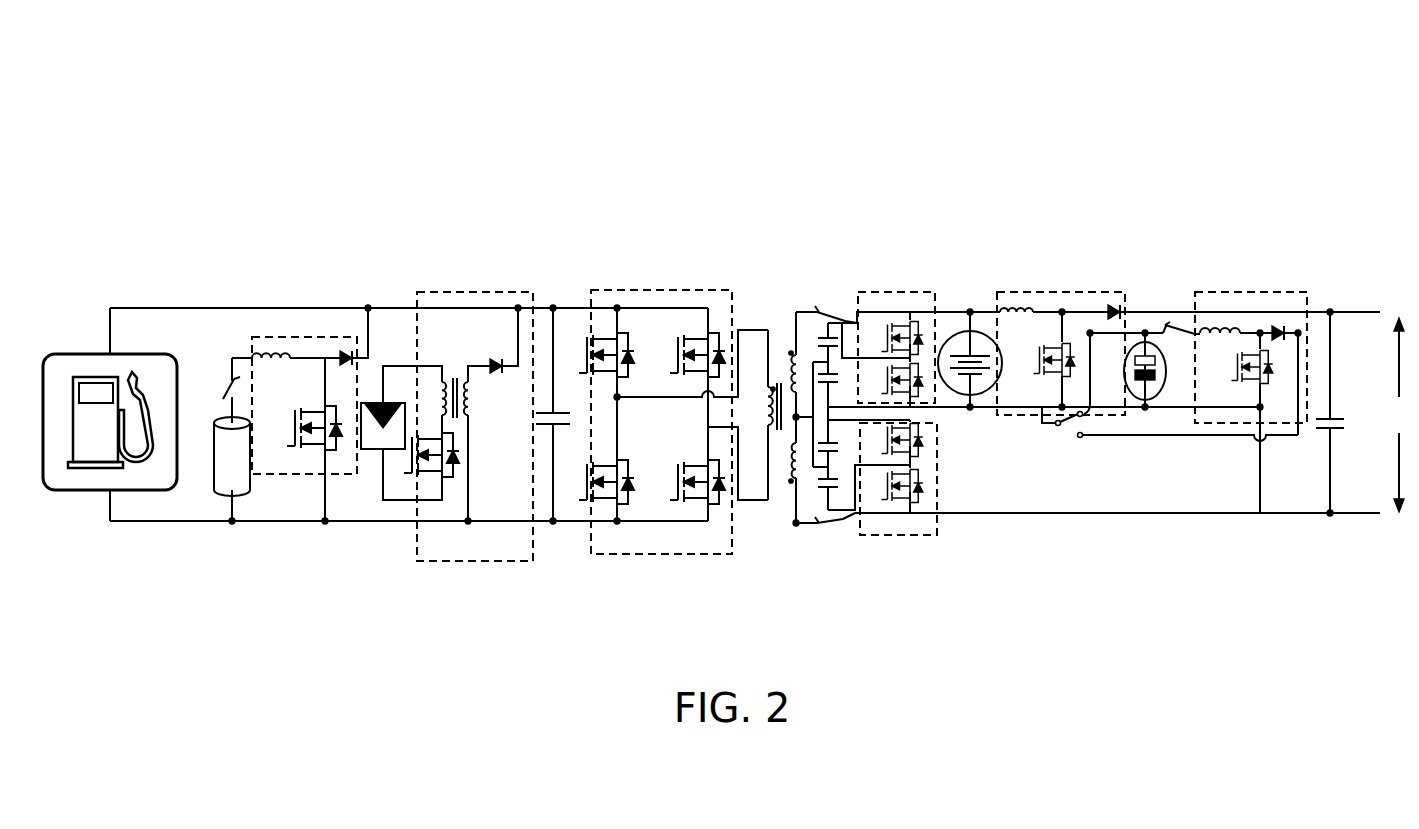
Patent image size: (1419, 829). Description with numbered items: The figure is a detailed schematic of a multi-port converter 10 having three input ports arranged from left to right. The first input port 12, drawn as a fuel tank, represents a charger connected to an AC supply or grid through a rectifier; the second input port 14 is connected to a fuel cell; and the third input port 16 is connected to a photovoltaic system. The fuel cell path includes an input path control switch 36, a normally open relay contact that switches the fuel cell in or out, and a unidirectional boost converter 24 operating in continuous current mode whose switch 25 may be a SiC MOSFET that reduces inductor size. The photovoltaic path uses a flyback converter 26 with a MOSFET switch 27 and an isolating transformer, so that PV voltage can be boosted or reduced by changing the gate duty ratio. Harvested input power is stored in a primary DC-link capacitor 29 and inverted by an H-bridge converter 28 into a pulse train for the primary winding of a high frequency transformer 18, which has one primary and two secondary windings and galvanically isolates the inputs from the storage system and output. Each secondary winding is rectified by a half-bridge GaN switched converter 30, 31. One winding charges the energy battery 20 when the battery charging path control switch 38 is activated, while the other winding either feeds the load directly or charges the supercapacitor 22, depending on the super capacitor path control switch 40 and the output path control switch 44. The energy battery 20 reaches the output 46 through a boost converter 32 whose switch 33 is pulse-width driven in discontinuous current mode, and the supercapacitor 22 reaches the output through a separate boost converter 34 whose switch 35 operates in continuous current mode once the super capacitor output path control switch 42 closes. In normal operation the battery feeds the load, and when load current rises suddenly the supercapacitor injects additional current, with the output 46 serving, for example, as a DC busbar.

The multi-port converter 10 is at (338, 292).
The first input port 12 is at (83, 492).
The second input port 14 is at (212, 472).
The third input port 16 is at (372, 452).
The high frequency transformer 18 is at (789, 322).
The energy battery 20 is at (958, 332).
The supercapacitor 22 is at (1148, 332).
The unidirectional boost converter 24 is at (278, 478).
The switch 25 is at (313, 456).
The flyback converter 26 is at (475, 563).
The MOSFET switch 27 is at (430, 482).
The H-bridge converter 28 is at (660, 556).
The primary DC-link capacitor 29 is at (547, 430).
The half-bridge GaN switched converter 30 is at (897, 537).
The half-bridge GaN switched converter 31 is at (885, 292).
The boost converter 32 is at (1050, 293).
The switch 33 is at (1075, 333).
The boost converter 34 is at (1252, 293).
The switch 35 is at (1250, 346).
The input path control switch 36 is at (224, 378).
The battery charging path control switch 38 is at (822, 306).
The super capacitor path control switch 40 is at (831, 533).
The super capacitor output path control switch 42 is at (1176, 320).
The output path control switch 44 is at (1052, 462).
The output 46 is at (1364, 416).